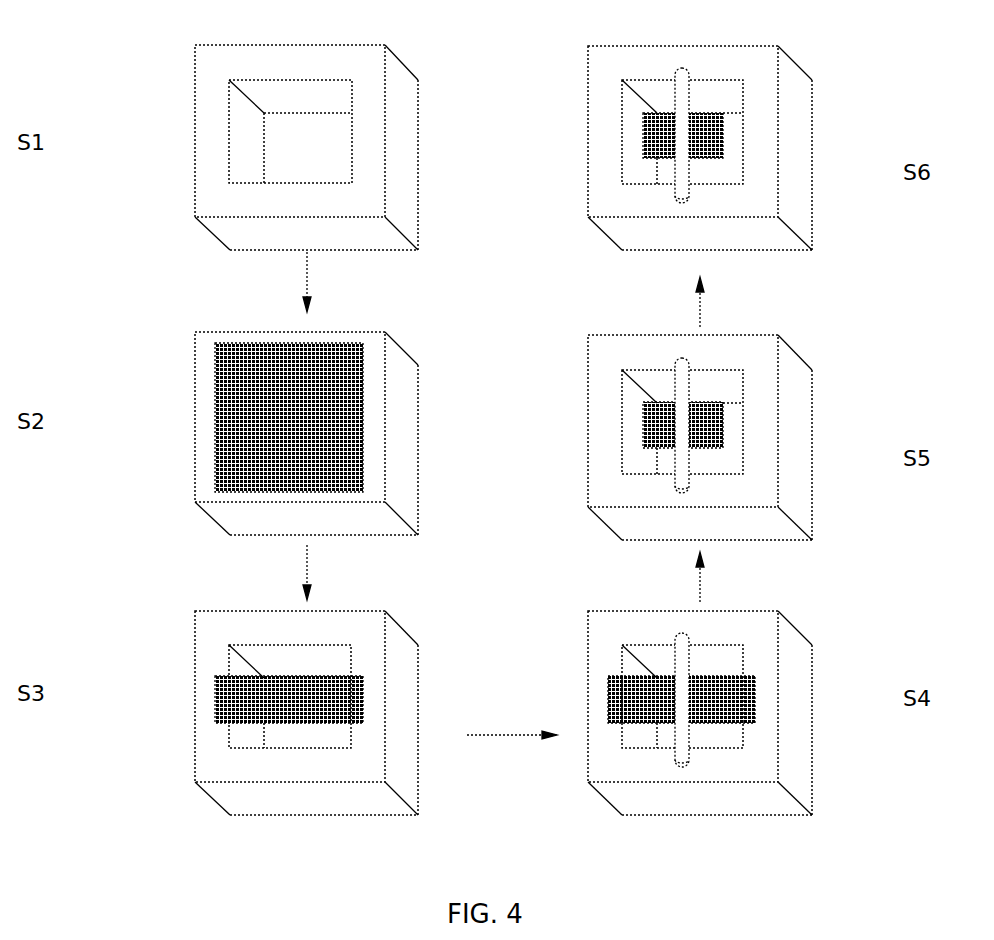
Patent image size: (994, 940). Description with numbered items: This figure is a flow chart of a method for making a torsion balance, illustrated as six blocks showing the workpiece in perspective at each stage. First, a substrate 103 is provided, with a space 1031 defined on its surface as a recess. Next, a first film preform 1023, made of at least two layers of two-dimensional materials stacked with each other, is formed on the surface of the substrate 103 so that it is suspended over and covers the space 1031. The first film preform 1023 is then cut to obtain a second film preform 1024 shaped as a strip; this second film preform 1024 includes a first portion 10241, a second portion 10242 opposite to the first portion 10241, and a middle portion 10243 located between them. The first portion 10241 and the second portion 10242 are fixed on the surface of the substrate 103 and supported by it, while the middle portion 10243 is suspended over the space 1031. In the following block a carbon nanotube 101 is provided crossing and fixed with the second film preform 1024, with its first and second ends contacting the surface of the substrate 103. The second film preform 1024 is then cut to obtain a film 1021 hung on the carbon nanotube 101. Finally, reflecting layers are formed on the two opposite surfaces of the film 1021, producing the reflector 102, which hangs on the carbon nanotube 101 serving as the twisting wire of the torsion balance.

The substrate 103 is at (209, 133).
The space 1031 is at (284, 135).
The first film preform 1023 is at (246, 383).
The second film preform 1024 is at (289, 688).
The first portion 10241 is at (217, 700).
The second portion 10242 is at (353, 700).
The middle portion 10243 is at (293, 703).
The carbon nanotube 101 is at (685, 669).
The film 1021 is at (700, 417).
The reflector 102 is at (707, 147).